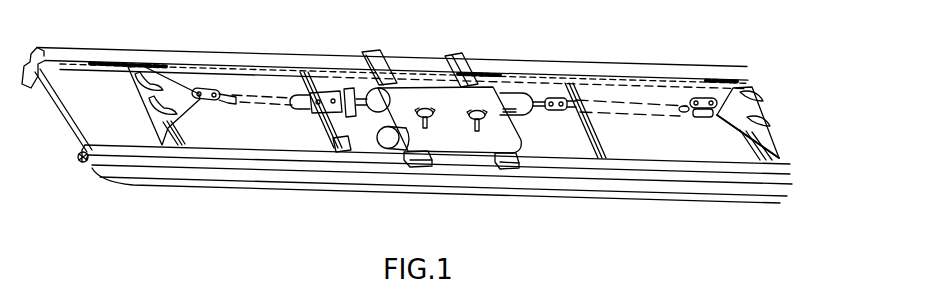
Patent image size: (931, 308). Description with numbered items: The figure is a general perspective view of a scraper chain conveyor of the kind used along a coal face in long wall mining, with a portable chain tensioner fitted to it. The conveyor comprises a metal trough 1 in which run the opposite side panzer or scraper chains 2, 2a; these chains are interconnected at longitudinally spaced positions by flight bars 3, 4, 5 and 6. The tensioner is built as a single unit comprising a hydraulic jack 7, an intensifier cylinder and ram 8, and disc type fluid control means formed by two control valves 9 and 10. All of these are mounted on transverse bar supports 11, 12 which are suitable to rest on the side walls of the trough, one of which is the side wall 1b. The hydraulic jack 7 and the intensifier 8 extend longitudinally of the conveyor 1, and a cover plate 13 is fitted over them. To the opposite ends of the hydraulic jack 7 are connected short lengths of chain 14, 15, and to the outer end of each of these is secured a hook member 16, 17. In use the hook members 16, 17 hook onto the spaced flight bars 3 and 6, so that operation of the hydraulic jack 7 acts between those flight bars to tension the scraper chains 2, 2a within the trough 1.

The metal trough 1 is at (67, 85).
The side wall 1b is at (298, 157).
The scraper chain 2 is at (107, 62).
The scraper chain 2a is at (82, 163).
The flight bar 3 is at (177, 142).
The flight bar 4 is at (343, 143).
The flight bar 5 is at (595, 158).
The flight bar 6 is at (763, 152).
The hydraulic jack 7 is at (513, 100).
The intensifier cylinder and ram 8 is at (390, 146).
The control valve 9 is at (477, 124).
The control valve 10 is at (427, 120).
The transverse bar support 11 is at (380, 60).
The transverse bar support 12 is at (460, 64).
The cover plate 13 is at (530, 143).
The short length of chain 14 is at (270, 95).
The short length of chain 15 is at (603, 112).
The hook member 16 is at (157, 92).
The hook member 17 is at (723, 100).